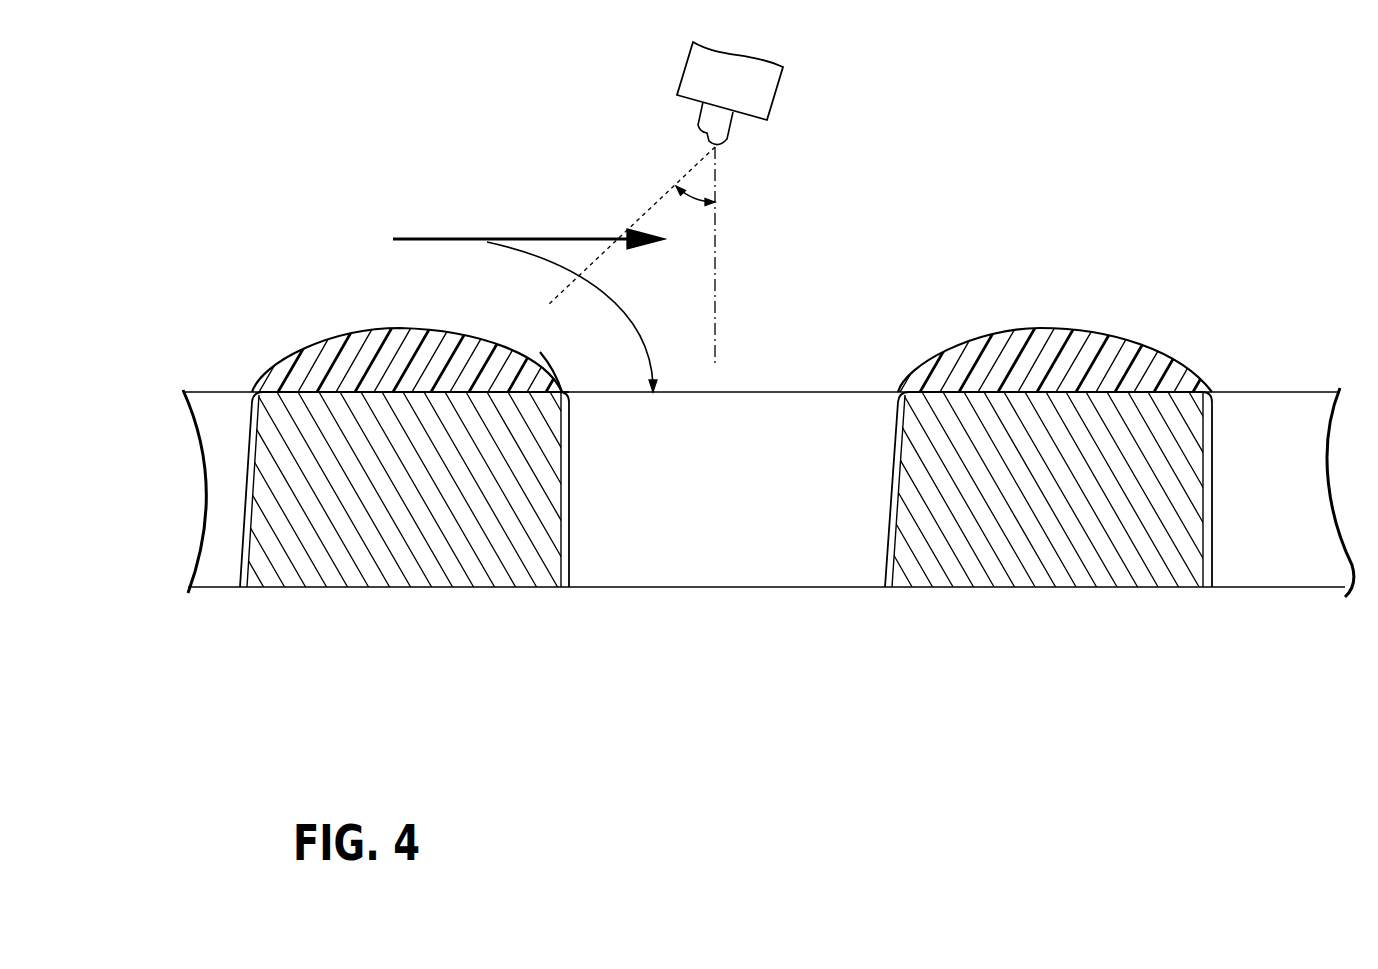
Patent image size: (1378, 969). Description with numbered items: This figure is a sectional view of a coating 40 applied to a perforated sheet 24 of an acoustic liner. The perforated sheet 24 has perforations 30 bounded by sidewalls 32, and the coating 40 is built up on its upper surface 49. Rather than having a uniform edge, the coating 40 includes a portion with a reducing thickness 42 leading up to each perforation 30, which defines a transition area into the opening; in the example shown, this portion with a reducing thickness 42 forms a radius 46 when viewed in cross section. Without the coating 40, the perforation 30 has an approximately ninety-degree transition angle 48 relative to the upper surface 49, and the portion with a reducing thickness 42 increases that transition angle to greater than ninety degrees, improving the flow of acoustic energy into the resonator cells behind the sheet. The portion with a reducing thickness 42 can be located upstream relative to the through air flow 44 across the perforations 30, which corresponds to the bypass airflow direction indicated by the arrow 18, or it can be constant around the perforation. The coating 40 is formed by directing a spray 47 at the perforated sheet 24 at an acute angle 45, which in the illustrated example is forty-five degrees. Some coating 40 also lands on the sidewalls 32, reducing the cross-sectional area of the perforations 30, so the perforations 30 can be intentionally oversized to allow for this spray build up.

The bypass airflow path arrow 18 is at (523, 238).
The perforated sheet 24 is at (398, 545).
The perforation 30 is at (211, 518).
The sidewall 32 is at (570, 530).
The coating 40 is at (345, 325).
The portion with a reducing thickness 42 is at (563, 373).
The through air flow 44 is at (642, 325).
The acute angle 45 is at (673, 196).
The radius 46 is at (562, 392).
The spray 47 is at (645, 204).
The transition angle 48 is at (563, 393).
The upper surface 49 is at (393, 392).